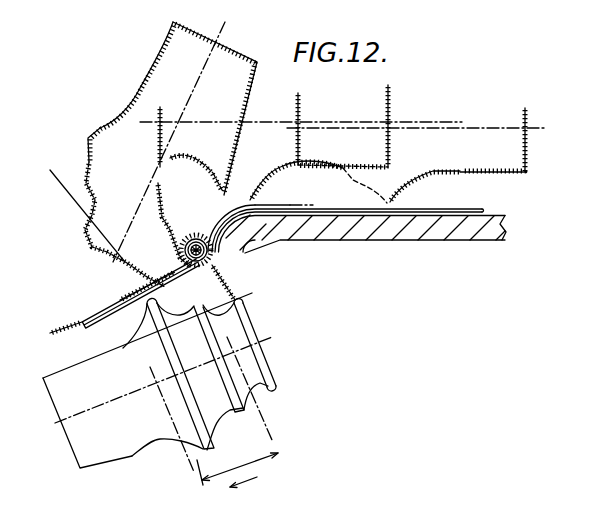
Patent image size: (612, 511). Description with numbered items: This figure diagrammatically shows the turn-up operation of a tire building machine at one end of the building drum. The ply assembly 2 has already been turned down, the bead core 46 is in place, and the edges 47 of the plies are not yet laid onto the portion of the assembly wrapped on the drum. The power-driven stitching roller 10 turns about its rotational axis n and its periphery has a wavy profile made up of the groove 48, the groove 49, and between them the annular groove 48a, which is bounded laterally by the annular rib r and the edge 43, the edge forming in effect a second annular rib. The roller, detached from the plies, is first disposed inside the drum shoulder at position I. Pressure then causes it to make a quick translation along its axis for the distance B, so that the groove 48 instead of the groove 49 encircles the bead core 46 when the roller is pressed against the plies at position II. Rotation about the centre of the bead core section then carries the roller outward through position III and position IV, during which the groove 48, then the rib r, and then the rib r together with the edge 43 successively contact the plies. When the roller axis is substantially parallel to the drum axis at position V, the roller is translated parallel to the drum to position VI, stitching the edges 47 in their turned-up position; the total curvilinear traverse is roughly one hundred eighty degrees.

The ply assembly 2 is at (440, 211).
The stitching roller 10 is at (93, 450).
The edge 43 is at (195, 454).
The bead core 46 is at (221, 256).
The edge of the ply assembly 47 is at (281, 208).
The annular groove 48 is at (252, 386).
The annular groove 48a is at (218, 418).
The groove 49 is at (158, 440).
The position I is at (263, 360).
The position II is at (112, 294).
The position III is at (136, 182).
The position IV is at (152, 65).
The position V is at (388, 93).
The position VI is at (527, 150).
The rotational axis of the roller n is at (163, 397).
The annular rib r is at (258, 420).
The distance B is at (240, 470).